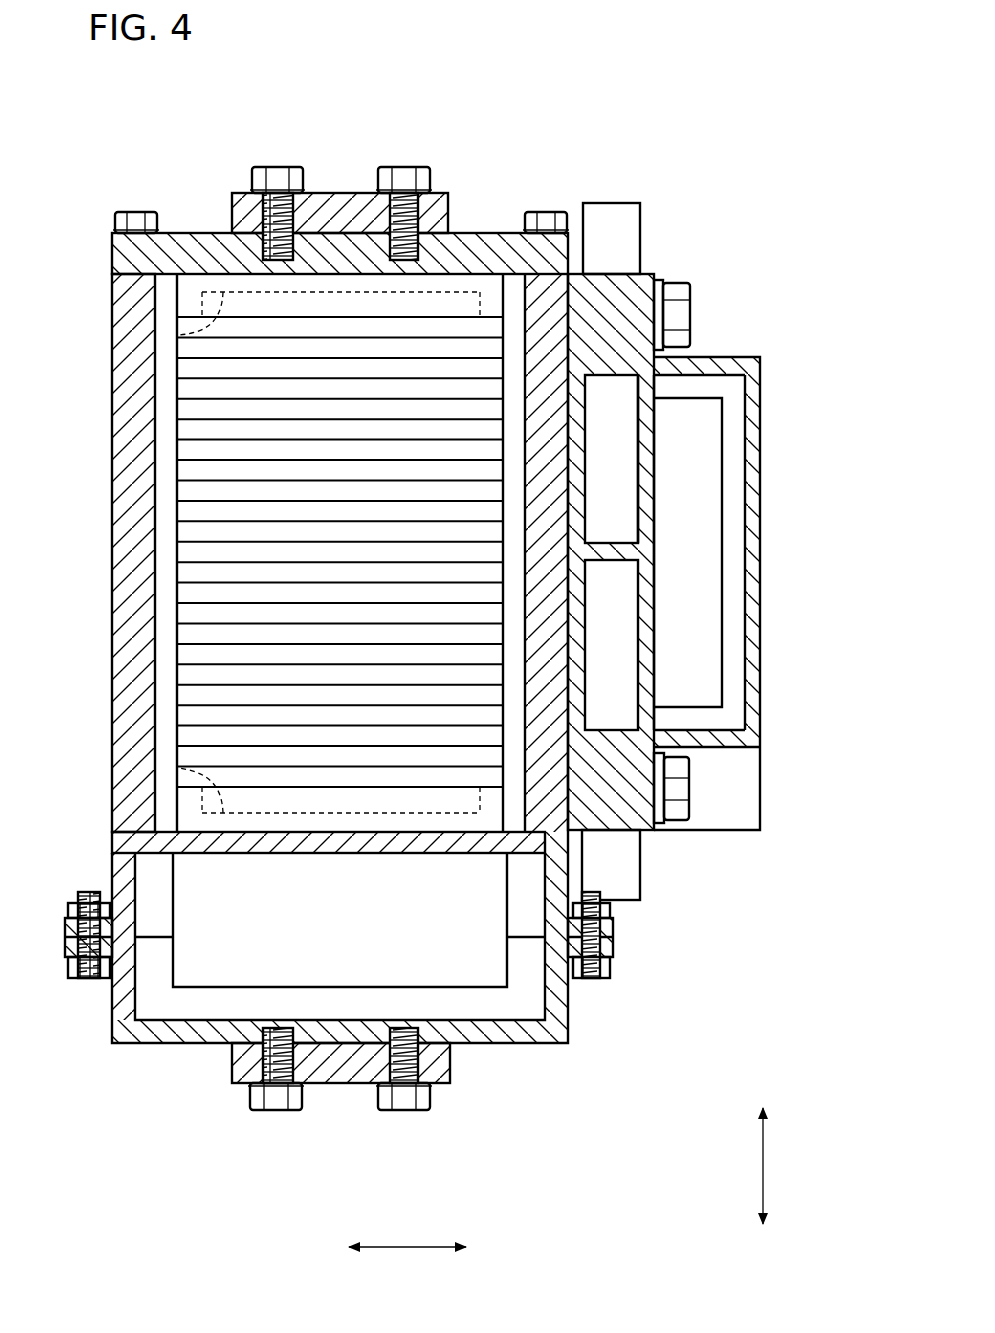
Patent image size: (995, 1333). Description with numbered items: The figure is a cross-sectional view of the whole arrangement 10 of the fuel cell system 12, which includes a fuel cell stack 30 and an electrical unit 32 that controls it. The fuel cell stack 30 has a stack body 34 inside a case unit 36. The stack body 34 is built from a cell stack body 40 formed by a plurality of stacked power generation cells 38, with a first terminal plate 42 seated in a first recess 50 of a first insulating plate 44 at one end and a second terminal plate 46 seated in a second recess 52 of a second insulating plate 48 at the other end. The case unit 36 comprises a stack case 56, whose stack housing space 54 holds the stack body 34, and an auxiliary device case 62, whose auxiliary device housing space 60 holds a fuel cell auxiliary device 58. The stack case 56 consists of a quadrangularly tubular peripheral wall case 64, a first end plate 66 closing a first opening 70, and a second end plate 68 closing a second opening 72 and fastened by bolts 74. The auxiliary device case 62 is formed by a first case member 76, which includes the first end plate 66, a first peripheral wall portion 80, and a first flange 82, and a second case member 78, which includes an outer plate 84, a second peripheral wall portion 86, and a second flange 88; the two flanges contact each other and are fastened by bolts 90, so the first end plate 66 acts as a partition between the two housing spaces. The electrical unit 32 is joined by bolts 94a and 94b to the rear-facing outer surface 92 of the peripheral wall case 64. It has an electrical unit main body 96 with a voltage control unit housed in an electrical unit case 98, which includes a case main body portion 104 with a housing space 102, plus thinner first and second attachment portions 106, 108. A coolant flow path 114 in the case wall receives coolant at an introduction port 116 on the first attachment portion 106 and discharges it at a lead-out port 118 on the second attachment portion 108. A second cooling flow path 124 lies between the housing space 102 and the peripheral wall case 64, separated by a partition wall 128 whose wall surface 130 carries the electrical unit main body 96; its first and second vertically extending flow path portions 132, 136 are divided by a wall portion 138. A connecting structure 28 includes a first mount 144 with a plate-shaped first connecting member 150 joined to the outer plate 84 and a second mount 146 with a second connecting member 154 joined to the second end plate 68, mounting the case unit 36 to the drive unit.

The reactor 10 is at (701, 76).
The fuel cell system 12 is at (716, 506).
The connecting structure 28 is at (318, 1019).
The fuel cell stack 30 is at (578, 251).
The electrical unit 32 is at (723, 353).
The stack body 34 is at (173, 507).
The case unit 36 is at (108, 252).
The power generation cells 38 is at (190, 615).
The cell stack body 40 is at (173, 680).
The first terminal plate 42 is at (200, 806).
The first insulating plate 44 is at (183, 820).
The second terminal plate 46 is at (200, 301).
The second insulating plate 48 is at (183, 284).
The first recess 50 is at (178, 770).
The second recess 52 is at (178, 333).
The stack housing space 54 is at (165, 724).
The stack case 56 is at (117, 225).
The fuel cell auxiliary device 58 is at (445, 990).
The auxiliary device housing space 60 is at (195, 1005).
The auxiliary device case 62 is at (385, 952).
The peripheral wall case 64 is at (150, 570).
The first end plate 66 is at (372, 845).
The second end plate 68 is at (478, 248).
The first opening 70 is at (510, 825).
The second opening 72 is at (168, 285).
The bolts 74 is at (545, 218).
The first case member 76 is at (608, 930).
The second case member 78 is at (605, 947).
The first peripheral wall portion 80 is at (123, 865).
The first flange 82 is at (70, 918).
The outer plate 84 is at (180, 1040).
The second peripheral wall portion 86 is at (118, 1000).
The second flange 88 is at (70, 958).
The bolts 90 is at (592, 970).
The outer surface 92 is at (575, 673).
The bolts 94a is at (690, 803).
The bolts 94b is at (675, 300).
The electrical unit main body 96 is at (712, 410).
The electrical unit case 98 is at (764, 355).
The housing space 102 is at (738, 578).
The case main body portion 104 is at (758, 681).
The first attachment portion 106 is at (630, 792).
The second attachment portion 108 is at (607, 320).
The coolant flow path 114 is at (630, 448).
The introduction port 116 is at (625, 862).
The lead-out port 118 is at (611, 215).
The second cooling flow path 124 is at (724, 565).
The partition wall 128 is at (652, 612).
The wall surface 130 is at (656, 648).
The first vertically extending flow path portion 132 is at (618, 686).
The second vertically extending flow path portion 136 is at (620, 476).
The wall portion 138 is at (615, 552).
The first mount 144 is at (364, 1117).
The second mount 146 is at (320, 187).
The first connecting member 150 is at (345, 1060).
The second connecting member 154 is at (335, 210).